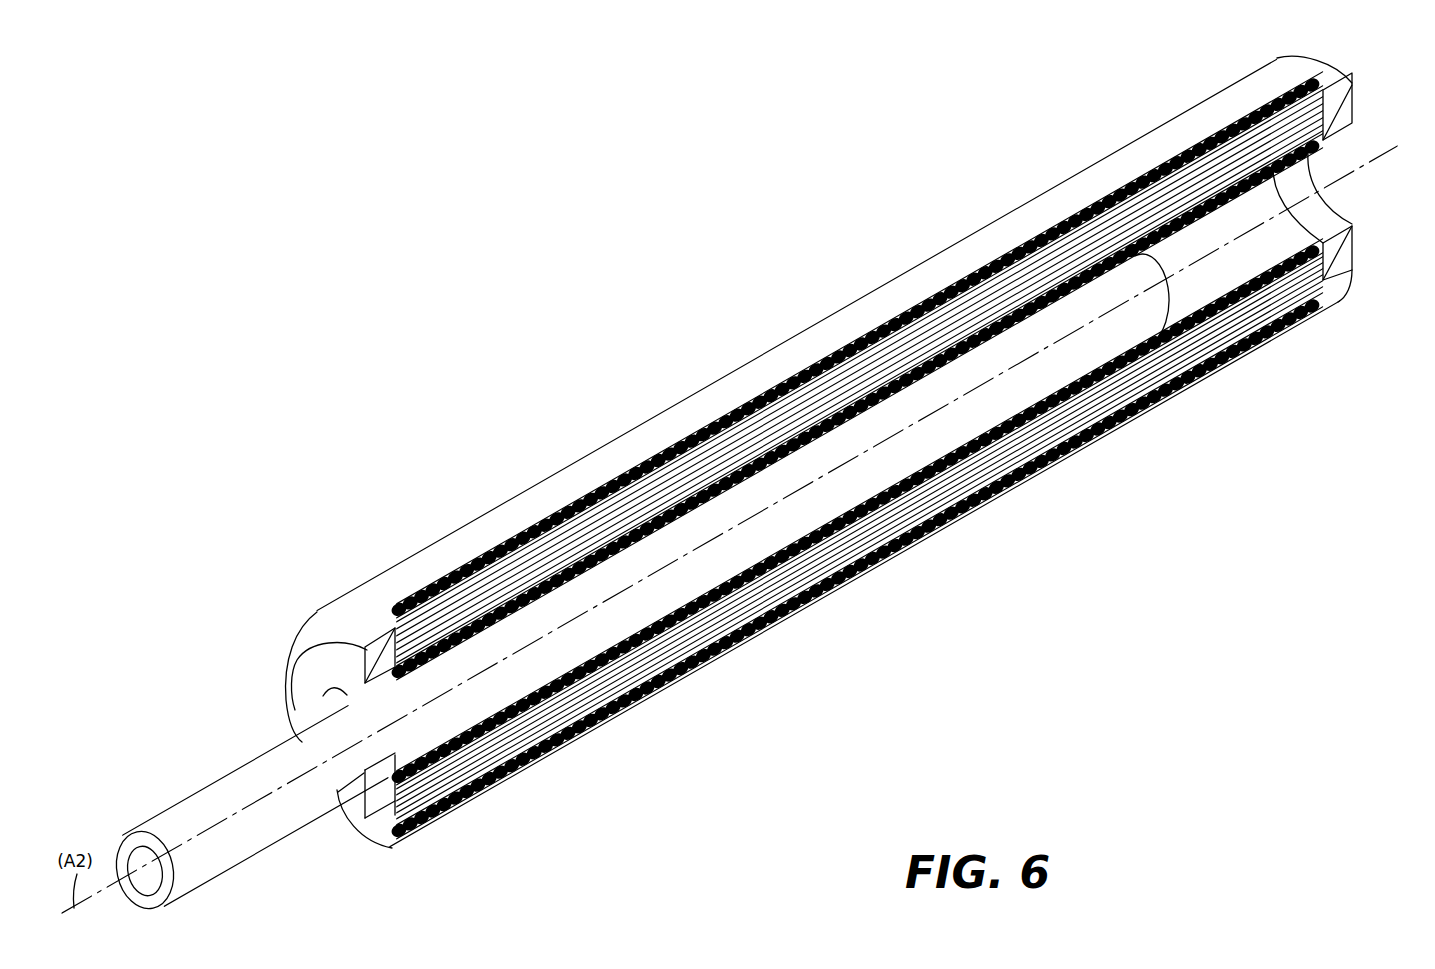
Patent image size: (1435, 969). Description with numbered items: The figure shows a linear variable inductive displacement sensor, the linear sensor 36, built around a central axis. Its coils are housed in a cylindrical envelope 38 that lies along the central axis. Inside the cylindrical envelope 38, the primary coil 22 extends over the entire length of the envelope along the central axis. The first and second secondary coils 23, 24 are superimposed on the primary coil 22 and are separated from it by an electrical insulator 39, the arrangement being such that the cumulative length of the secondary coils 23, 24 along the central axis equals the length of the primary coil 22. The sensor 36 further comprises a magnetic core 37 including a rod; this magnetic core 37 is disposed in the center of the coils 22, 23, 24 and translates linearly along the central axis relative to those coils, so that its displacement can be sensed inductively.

The primary coil 22 is at (750, 627).
The first secondary coil 23 is at (604, 493).
The second secondary coil 24 is at (1052, 263).
The linear sensor 36 is at (458, 300).
The magnetic core 37 is at (231, 770).
The cylindrical envelope 38 is at (1213, 86).
The electrical insulator 39 is at (912, 533).